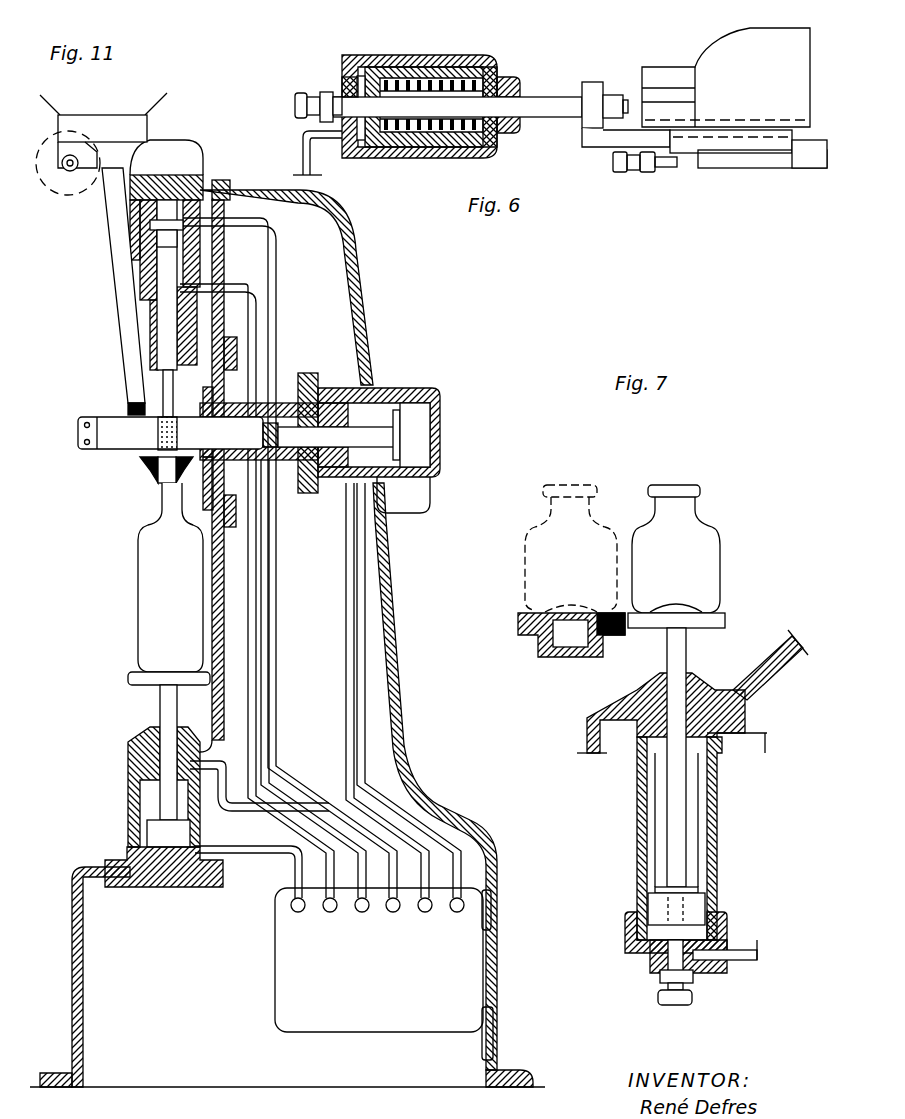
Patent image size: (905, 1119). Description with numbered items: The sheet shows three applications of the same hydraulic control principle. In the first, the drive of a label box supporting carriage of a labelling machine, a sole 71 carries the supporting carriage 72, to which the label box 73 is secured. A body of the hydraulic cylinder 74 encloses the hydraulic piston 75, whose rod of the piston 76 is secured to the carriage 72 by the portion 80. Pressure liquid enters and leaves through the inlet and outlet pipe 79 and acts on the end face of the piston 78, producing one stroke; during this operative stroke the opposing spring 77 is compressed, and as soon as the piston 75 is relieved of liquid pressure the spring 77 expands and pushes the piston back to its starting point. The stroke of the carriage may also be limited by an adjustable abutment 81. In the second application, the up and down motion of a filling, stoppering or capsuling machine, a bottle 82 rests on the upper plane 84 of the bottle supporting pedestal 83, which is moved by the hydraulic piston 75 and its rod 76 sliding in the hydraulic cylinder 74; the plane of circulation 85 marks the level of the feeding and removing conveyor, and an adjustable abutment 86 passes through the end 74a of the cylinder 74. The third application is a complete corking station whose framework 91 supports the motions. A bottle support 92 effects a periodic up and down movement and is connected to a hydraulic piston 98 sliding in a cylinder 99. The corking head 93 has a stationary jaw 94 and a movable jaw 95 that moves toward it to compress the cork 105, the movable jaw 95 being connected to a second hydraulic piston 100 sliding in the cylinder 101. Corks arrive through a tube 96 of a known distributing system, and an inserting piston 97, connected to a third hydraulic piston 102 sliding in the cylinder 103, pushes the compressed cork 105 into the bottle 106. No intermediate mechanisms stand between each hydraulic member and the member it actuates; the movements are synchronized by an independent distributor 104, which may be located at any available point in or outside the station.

In FIG. 6, the sole of the label box supporting carriage 71 is at (815, 143).
In FIG. 6, the supporting carriage 72 is at (782, 143).
In FIG. 6, the label box 73 is at (778, 50).
In FIG. 6, the body of the hydraulic cylinder 74 is at (480, 67).
In FIG. 7, the body of the hydraulic cylinder 74 is at (718, 852).
In FIG. 7, the end of the cylinder 74a is at (630, 950).
In FIG. 6, the hydraulic piston 75 is at (372, 55).
In FIG. 7, the hydraulic piston 75 is at (692, 903).
In FIG. 6, the rod of the piston 76 is at (532, 107).
In FIG. 7, the rod of the piston 76 is at (675, 803).
In FIG. 6, the opposing spring 77 is at (458, 66).
In FIG. 6, the end face of the piston 78 is at (342, 83).
In FIG. 6, the inlet and outlet pipe for the pressure liquid 79 is at (313, 158).
In FIG. 6, the portion 80 is at (593, 90).
In FIG. 6, the adjustable abutment 81 is at (668, 163).
In FIG. 7, the bottle 82 is at (705, 547).
In FIG. 7, the bottle supporting pedestal 83 is at (715, 622).
In FIG. 7, the upper plane of the pedestal 84 is at (687, 612).
In FIG. 7, the plane of circulation of the bottles 85 is at (555, 615).
In FIG. 6, the adjustable abutment 86 is at (303, 112).
In FIG. 7, the adjustable abutment 86 is at (692, 997).
In FIG. 11, the framework 91 is at (403, 687).
In FIG. 11, the bottle support 92 is at (143, 680).
In FIG. 11, the corking head 93 is at (272, 400).
In FIG. 11, the stationary jaw 94 is at (163, 487).
In FIG. 11, the movable jaw 95 is at (133, 442).
In FIG. 11, the tube for distributing the corks 96 is at (117, 210).
In FIG. 11, the inserting piston 97 is at (168, 393).
In FIG. 11, the hydraulic piston 98 is at (155, 837).
In FIG. 11, the cylinder 99 is at (140, 800).
In FIG. 11, the second hydraulic piston 100 is at (412, 437).
In FIG. 11, the cylinder 101 is at (440, 403).
In FIG. 11, the third hydraulic piston 102 is at (168, 232).
In FIG. 11, the cylinder 103 is at (197, 173).
In FIG. 11, the distributor 104 is at (473, 983).
In FIG. 11, the cork 105 is at (158, 435).
In FIG. 11, the bottle 106 is at (163, 583).